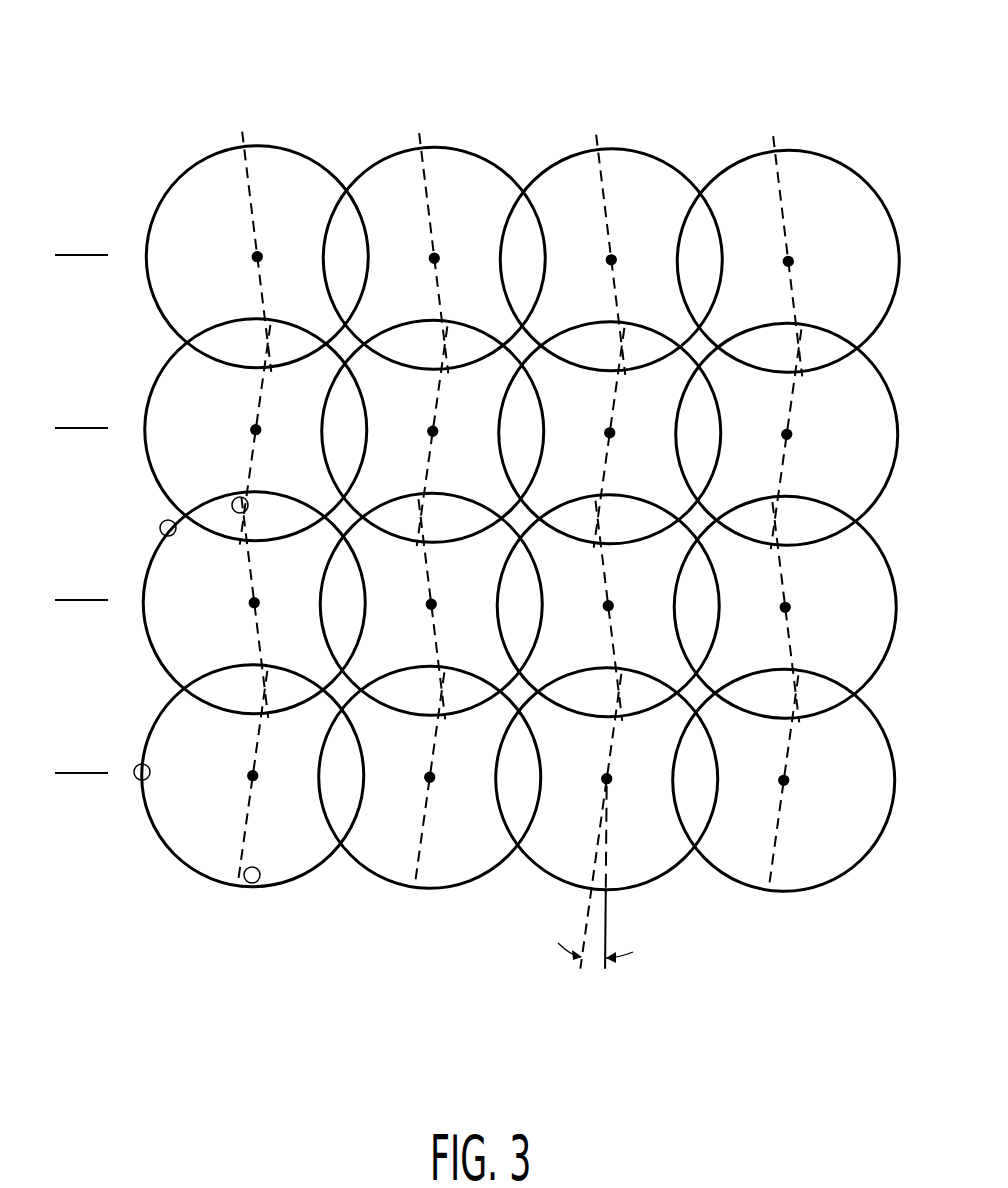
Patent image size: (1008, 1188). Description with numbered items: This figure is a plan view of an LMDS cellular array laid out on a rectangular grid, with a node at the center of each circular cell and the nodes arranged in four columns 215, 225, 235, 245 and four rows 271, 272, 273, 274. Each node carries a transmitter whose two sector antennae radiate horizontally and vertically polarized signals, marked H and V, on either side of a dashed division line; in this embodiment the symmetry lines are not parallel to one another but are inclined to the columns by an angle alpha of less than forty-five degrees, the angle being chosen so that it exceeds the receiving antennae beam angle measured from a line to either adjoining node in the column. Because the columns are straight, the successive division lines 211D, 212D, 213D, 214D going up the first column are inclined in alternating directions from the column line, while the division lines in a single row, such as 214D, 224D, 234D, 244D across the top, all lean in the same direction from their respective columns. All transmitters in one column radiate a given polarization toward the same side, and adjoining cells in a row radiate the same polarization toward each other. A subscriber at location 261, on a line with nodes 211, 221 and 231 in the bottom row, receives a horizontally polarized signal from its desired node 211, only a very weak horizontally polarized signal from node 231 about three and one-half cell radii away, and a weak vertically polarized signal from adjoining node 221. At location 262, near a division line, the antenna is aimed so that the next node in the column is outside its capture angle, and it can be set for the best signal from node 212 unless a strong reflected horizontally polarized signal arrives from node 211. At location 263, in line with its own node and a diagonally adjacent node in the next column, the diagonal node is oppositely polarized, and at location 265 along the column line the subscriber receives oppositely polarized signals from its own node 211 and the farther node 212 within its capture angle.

The node 211 is at (251, 780).
The node 212 is at (250, 605).
The node 221 is at (429, 781).
The node 231 is at (605, 782).
The division line 211D is at (240, 860).
The division line 212D is at (255, 642).
The division line 213D is at (258, 396).
The division line 214D is at (246, 163).
The division line 224D is at (423, 165).
The division line 234D is at (600, 165).
The division line 244D is at (778, 165).
The column 215 is at (255, 117).
The column 225 is at (433, 117).
The column 235 is at (610, 117).
The column 245 is at (788, 117).
The row 271 is at (95, 773).
The row 272 is at (95, 600).
The row 273 is at (95, 428).
The row 274 is at (95, 255).
The subscriber location 261 is at (135, 779).
The subscriber location 262 is at (232, 504).
The subscriber location 263 is at (160, 527).
The subscriber location 265 is at (260, 882).